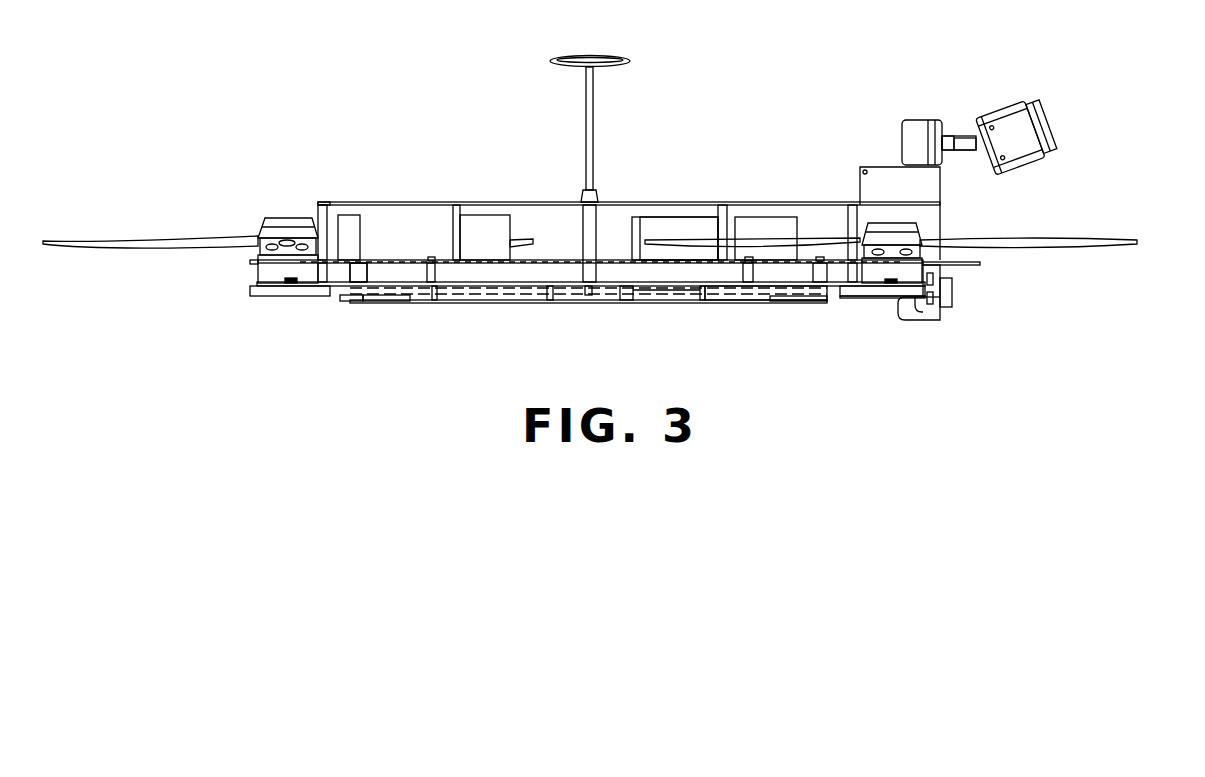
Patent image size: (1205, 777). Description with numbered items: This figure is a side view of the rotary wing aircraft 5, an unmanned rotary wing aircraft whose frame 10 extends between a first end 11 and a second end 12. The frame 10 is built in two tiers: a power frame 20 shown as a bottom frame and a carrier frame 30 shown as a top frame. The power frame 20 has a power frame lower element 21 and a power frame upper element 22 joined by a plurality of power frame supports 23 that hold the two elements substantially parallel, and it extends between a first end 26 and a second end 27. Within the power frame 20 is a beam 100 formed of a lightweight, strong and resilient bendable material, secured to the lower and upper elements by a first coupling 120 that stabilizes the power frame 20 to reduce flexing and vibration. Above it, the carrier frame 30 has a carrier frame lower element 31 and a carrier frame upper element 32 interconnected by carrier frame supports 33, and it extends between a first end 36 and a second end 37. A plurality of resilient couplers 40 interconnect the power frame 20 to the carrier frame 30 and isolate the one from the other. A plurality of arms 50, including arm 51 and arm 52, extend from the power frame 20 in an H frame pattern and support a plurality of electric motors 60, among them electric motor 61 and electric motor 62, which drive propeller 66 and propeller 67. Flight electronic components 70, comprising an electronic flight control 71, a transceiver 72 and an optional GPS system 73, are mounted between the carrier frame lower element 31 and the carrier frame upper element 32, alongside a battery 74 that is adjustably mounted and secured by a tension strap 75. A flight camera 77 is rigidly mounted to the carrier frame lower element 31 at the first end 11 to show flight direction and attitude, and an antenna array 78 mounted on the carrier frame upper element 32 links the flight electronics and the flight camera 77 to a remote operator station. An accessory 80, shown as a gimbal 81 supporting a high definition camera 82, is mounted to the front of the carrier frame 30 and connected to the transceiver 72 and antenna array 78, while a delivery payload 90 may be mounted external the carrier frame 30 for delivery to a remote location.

The rotary wing aircraft 5 is at (247, 58).
The frame 10 is at (362, 203).
The first end of frame 11 is at (978, 267).
The second end of frame 12 is at (313, 202).
The power frame 20 is at (433, 302).
The power frame lower element 21 is at (487, 303).
The power frame upper element 22 is at (678, 287).
The power frame supports 23 is at (550, 290).
The first end of power frame 26 is at (825, 308).
The second end of power frame 27 is at (350, 303).
The carrier frame 30 is at (532, 203).
The carrier frame lower element 31 is at (398, 258).
The carrier frame upper element 32 is at (820, 202).
The carrier frame supports 33 is at (458, 210).
The first end of carrier frame 36 is at (965, 267).
The second end of carrier frame 37 is at (316, 202).
The resilient couplers 40 is at (353, 273).
The arms 50 is at (962, 383).
The arm 51 is at (872, 292).
The arm 52 is at (258, 292).
The electric motors 60 is at (1048, 332).
The electric motor 61 is at (893, 265).
The electric motor 62 is at (258, 265).
The propeller 66 is at (1107, 240).
The propeller 67 is at (95, 240).
The flight electronic components 70 is at (653, 110).
The electronic flight control 71 is at (640, 228).
The transceiver 72 is at (684, 222).
The GPS system 73 is at (773, 222).
The battery 74 is at (267, 218).
The tension strap 75 is at (342, 242).
The flight camera 77 is at (945, 307).
The antenna array 78 is at (555, 62).
The accessory 80 is at (1085, 70).
The gimbal 81 is at (925, 123).
The high definition camera 82 is at (995, 102).
The delivery payload 90 is at (1097, 143).
The beam 100 is at (715, 292).
The first coupling 120 is at (458, 293).